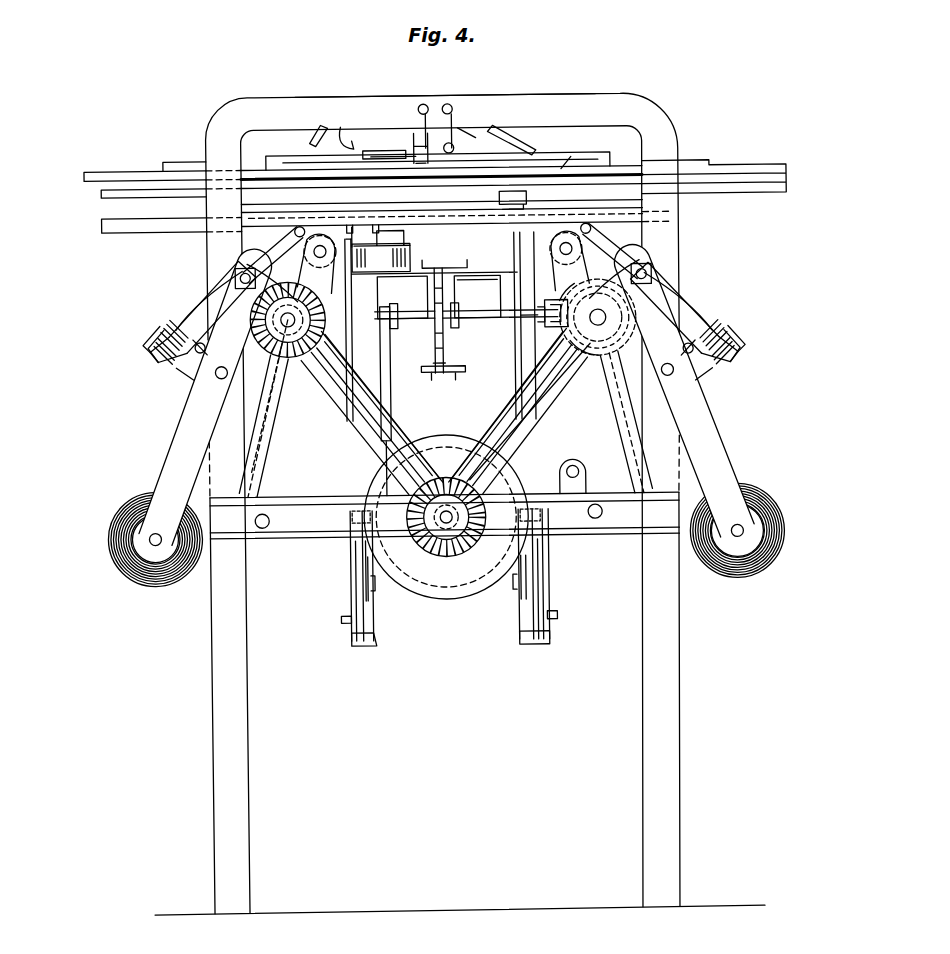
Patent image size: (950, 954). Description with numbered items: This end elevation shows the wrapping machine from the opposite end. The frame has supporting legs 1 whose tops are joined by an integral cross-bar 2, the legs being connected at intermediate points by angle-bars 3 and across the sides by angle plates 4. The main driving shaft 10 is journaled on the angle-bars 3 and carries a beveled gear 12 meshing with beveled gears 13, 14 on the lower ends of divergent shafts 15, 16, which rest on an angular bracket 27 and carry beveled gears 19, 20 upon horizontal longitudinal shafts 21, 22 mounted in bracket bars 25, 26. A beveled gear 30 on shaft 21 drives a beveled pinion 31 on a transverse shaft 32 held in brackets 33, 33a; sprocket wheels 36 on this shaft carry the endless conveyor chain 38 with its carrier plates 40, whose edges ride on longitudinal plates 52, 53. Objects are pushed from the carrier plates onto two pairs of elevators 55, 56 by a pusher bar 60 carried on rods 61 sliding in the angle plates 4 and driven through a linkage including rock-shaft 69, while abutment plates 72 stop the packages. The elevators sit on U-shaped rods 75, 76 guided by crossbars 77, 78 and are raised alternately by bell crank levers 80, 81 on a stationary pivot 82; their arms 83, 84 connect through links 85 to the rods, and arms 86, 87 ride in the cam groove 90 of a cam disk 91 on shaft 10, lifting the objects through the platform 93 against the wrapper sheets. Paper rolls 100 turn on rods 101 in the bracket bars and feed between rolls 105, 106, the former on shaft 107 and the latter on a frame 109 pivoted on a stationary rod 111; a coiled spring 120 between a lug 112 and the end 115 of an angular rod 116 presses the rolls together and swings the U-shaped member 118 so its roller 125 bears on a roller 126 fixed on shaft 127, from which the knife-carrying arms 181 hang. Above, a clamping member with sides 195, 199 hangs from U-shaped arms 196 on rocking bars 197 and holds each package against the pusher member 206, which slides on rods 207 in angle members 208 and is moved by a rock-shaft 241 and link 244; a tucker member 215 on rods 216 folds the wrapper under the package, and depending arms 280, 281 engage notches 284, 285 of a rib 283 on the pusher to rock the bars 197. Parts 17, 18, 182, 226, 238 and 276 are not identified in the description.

The supporting legs 1 is at (210, 758).
The cross-bar 2 is at (559, 98).
The angle-bars 3 is at (291, 538).
The angle plates 4 is at (150, 229).
The main driving shaft 10 is at (446, 545).
The beveled gear 12 is at (461, 555).
The beveled gear 13 is at (521, 437).
The beveled gear 14 is at (401, 492).
The shaft 15 is at (546, 422).
The shaft 16 is at (373, 428).
The gear 17 is at (600, 364).
The gear 18 is at (292, 362).
The beveled gear 19 is at (612, 362).
The beveled gear 20 is at (291, 360).
The horizontal shaft 21 is at (636, 421).
The horizontal shaft 22 is at (250, 426).
The bracket bars 25 is at (707, 459).
The bracket bars 26 is at (186, 464).
The angular bracket 27 is at (372, 396).
The beveled gear 30 is at (553, 304).
The beveled pinion 31 is at (522, 337).
The shaft 32 is at (477, 295).
The bracket 33 is at (540, 319).
The bracket 33a is at (398, 323).
The sprocket wheels 36 is at (447, 347).
The endless conveyor chain 38 is at (430, 371).
The carrier plates 40 is at (471, 267).
The plate 52 is at (402, 297).
The plate 53 is at (477, 296).
The elevators 55 is at (379, 324).
The elevators 56 is at (440, 322).
The pusher bar 60 is at (408, 237).
The rods 61 is at (292, 224).
The rock-shaft 69 is at (262, 527).
The vertical abutment plates 72 is at (414, 267).
The U-shaped rods 75 is at (401, 321).
The U-shaped rods 76 is at (463, 321).
The crossbars 77 is at (392, 408).
The crossbars 78 is at (512, 410).
The bell crank lever 80 is at (348, 641).
The bell crank lever 81 is at (541, 636).
The stationary pivot 82 is at (340, 620).
The arm 83 is at (377, 643).
The arm 84 is at (523, 586).
The links 85 is at (373, 585).
The arm 86 is at (351, 585).
The arm 87 is at (541, 581).
The cam groove 90 is at (429, 601).
The cam wheel 91 is at (391, 555).
The platform 93 is at (445, 214).
The rolls 100 is at (120, 554).
The rods 101 is at (153, 543).
The feed roll 105 is at (200, 366).
The feed roll 106 is at (165, 339).
The rotatable shaft 107 is at (200, 378).
The frame 109 is at (217, 370).
The stationary rod 111 is at (238, 280).
The lug 112 is at (175, 357).
The lower end 115 is at (150, 341).
The angular rod 116 is at (232, 288).
The U-shaped frame member 118 is at (238, 274).
The coiled spring 120 is at (155, 347).
The roller 125 is at (297, 230).
The roller 126 is at (300, 242).
The shaft 127 is at (325, 243).
The depending arms 181 is at (352, 418).
The shaft 182 is at (534, 414).
The side of clamping member 195 is at (360, 128).
The U-shaped arm 196 is at (508, 126).
The rocking bar 197 is at (452, 103).
The side of clamping member 199 is at (322, 126).
The pusher member 206 is at (427, 145).
The rods 207 is at (167, 161).
The angle members 208 is at (215, 156).
The tucker member 215 is at (502, 199).
The rods 216 is at (92, 181).
The lug 226 is at (588, 471).
The rail 238 is at (292, 160).
The rock-shaft 241 is at (601, 520).
The link 244 is at (490, 124).
The plate 276 is at (365, 240).
The depending arm 280 is at (462, 128).
The depending arm 281 is at (375, 150).
The rib 283 is at (388, 148).
The notch 284 is at (459, 149).
The notch 285 is at (357, 137).